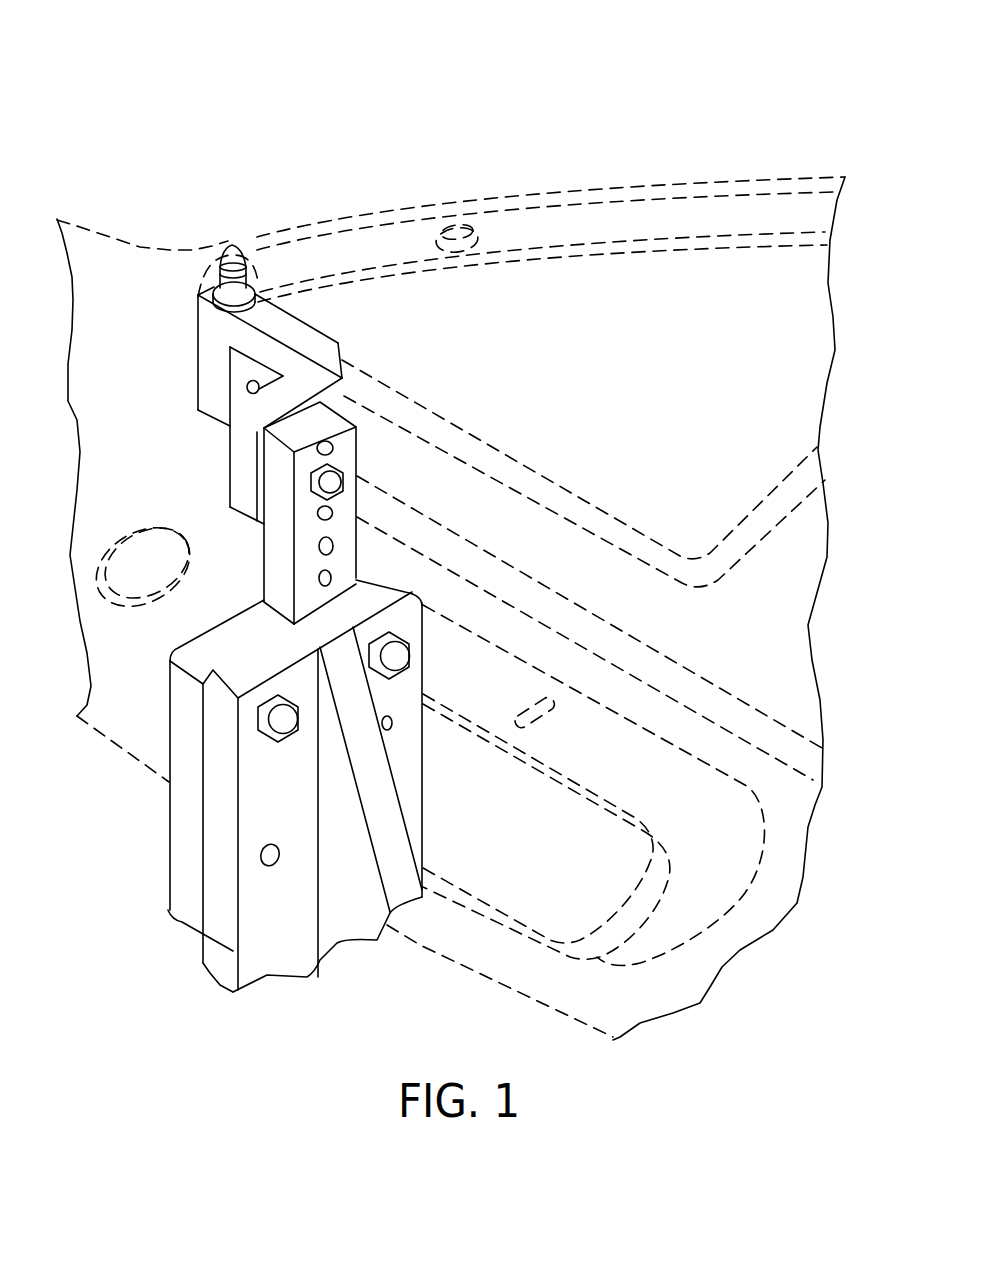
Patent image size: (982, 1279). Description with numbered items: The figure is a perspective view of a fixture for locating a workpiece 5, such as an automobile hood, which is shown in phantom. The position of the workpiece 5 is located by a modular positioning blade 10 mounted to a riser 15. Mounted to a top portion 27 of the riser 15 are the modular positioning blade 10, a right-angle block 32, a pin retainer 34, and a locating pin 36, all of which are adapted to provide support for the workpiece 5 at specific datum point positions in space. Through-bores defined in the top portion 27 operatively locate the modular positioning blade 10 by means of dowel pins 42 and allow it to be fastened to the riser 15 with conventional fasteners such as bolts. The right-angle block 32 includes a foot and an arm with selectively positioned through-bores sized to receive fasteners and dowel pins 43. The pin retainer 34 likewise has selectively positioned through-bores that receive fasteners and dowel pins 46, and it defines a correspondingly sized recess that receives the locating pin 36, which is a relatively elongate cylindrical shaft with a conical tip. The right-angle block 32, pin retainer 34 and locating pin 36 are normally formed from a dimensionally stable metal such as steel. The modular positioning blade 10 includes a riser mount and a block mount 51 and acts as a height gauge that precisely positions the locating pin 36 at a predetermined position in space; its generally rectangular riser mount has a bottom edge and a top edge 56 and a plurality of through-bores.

The workpiece 5 is at (600, 194).
The modular positioning blade 10 is at (180, 822).
The riser 15 is at (257, 973).
The top portion 27 is at (215, 932).
The right-angle block 32 is at (243, 412).
The pin retainer 34 is at (323, 342).
The locating pin 36 is at (244, 257).
The dowel pin 42 is at (275, 800).
The dowel pin 43 is at (334, 450).
The dowel pin 46 is at (249, 385).
The block mount 51 is at (280, 553).
The top edge 56 is at (219, 640).